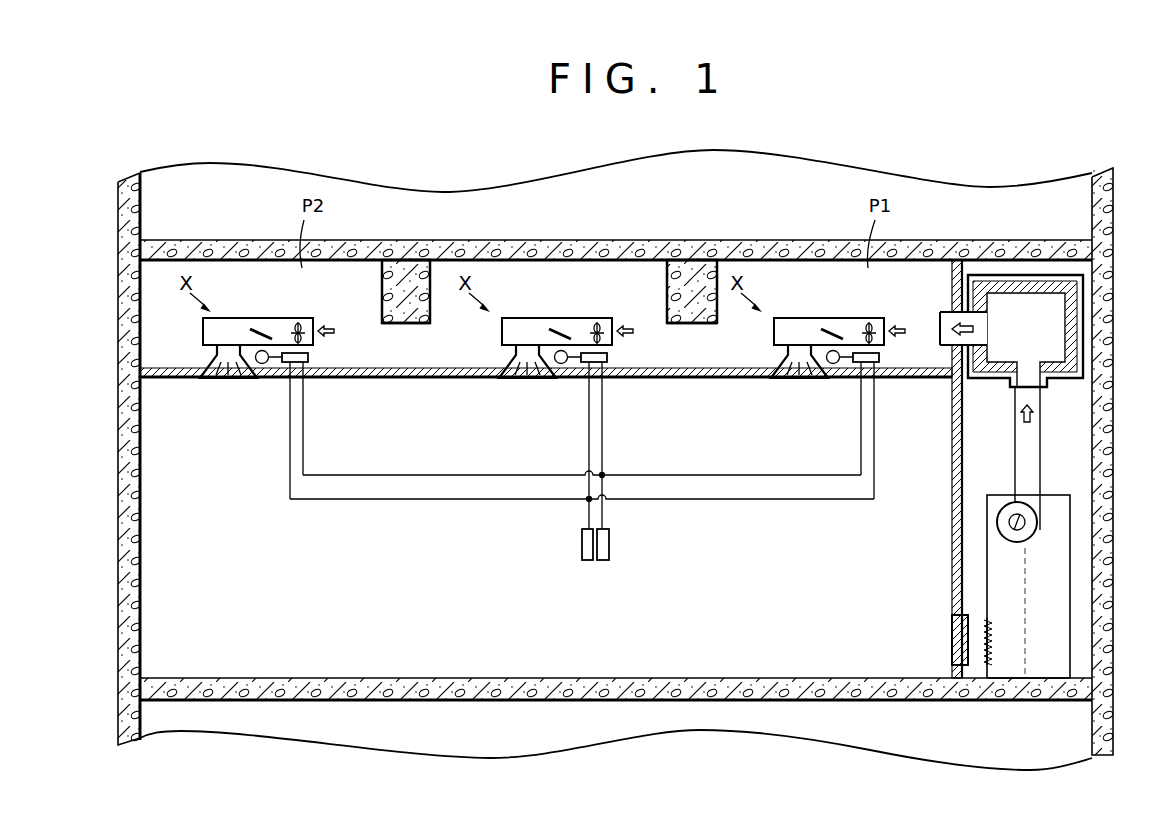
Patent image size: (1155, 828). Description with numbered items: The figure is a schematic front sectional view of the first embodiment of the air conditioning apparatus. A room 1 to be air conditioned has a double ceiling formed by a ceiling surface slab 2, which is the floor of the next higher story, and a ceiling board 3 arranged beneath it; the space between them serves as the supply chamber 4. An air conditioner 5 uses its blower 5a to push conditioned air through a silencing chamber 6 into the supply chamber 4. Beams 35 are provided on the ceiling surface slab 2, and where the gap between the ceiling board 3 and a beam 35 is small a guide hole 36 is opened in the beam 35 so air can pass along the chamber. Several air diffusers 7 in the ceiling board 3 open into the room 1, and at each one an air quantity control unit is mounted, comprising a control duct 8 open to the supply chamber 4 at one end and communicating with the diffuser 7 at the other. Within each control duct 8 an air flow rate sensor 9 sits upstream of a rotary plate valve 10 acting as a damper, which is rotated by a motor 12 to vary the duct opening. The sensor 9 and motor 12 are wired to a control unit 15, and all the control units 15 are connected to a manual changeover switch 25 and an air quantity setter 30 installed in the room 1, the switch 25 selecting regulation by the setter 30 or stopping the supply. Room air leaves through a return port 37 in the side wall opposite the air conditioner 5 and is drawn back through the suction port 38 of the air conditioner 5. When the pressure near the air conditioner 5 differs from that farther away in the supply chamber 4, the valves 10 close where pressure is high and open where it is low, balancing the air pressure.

The room 1 is at (322, 657).
The ceiling surface slab 2 is at (489, 256).
The ceiling board 3 is at (405, 378).
The supply chamber 4 is at (591, 266).
The air conditioner 5 is at (1057, 573).
The blower 5a is at (1040, 516).
The silencing chamber 6 is at (1055, 322).
The air diffuser 7 is at (240, 379).
The control duct 8 is at (213, 318).
The air flow rate sensor 9 is at (298, 321).
The rotary plate valve 10 is at (258, 328).
The motor 12 is at (263, 364).
The control unit 15 is at (308, 357).
The manual changeover switch 25 is at (582, 545).
The air quantity setter 30 is at (609, 545).
The beam 35 is at (415, 323).
The guide hole 36 is at (405, 262).
The return port 37 is at (952, 641).
The suction port 38 is at (1003, 657).